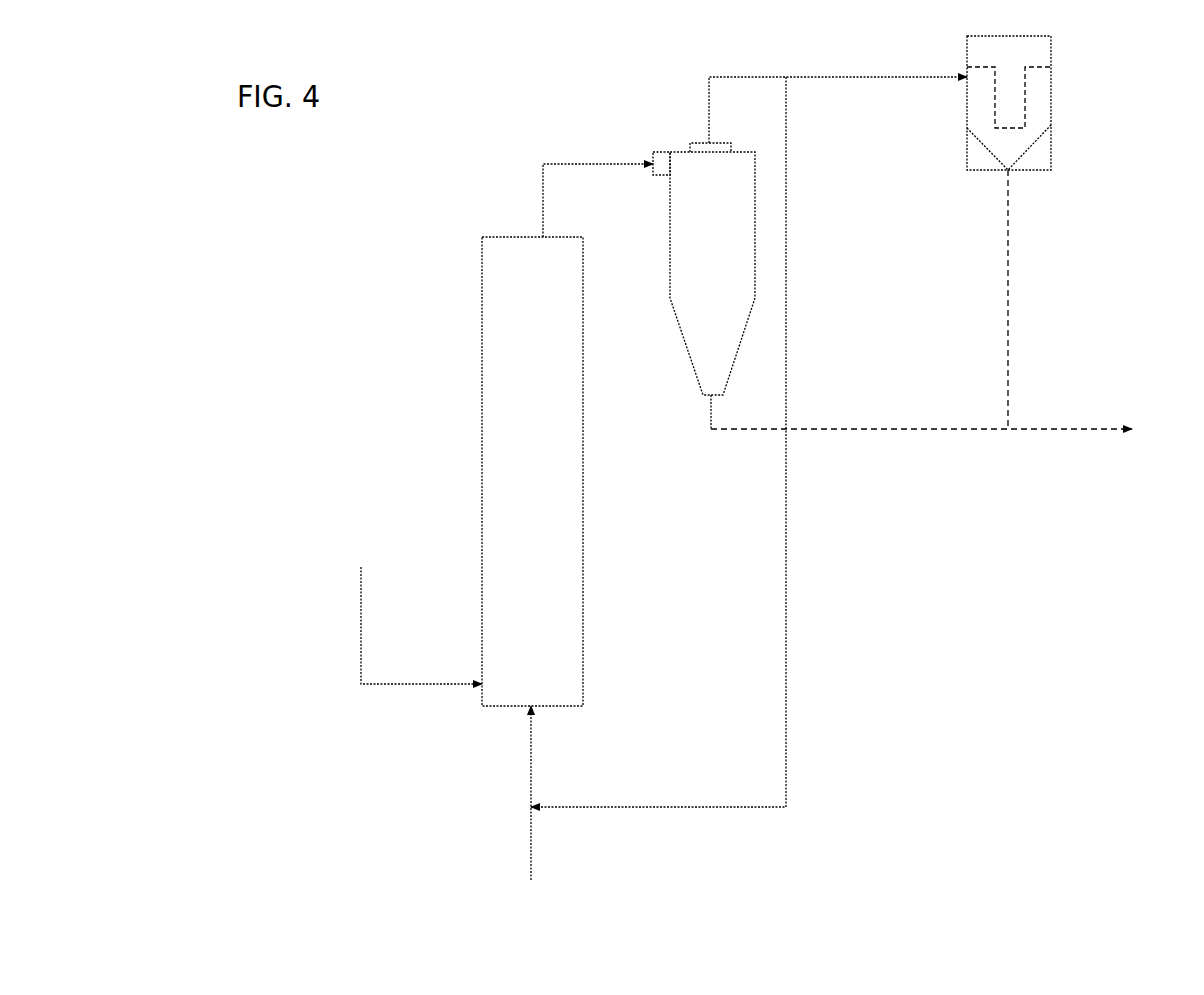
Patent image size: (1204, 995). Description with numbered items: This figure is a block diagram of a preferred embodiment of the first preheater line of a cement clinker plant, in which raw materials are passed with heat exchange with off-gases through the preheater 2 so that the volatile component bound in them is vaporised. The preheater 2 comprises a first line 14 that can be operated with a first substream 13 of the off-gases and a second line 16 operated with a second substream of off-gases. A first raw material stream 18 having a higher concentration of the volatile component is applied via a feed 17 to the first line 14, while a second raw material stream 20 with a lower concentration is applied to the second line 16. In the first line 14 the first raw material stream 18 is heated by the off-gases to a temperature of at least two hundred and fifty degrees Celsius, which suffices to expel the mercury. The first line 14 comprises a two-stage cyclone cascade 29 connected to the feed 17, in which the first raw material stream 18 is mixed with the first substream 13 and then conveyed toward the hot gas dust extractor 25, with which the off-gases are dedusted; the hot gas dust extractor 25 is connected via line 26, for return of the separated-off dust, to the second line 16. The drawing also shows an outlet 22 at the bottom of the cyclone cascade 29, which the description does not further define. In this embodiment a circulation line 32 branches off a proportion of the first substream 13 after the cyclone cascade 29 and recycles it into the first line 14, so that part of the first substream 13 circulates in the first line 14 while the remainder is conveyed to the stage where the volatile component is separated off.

The preheater 2 is at (450, 348).
The first line 14 is at (460, 285).
The second raw material stream 20 is at (563, 468).
The cyclone cascade 29 is at (723, 193).
The solids outlet line 22 is at (740, 432).
The first raw material stream 18 is at (1108, 427).
The hot gas dust extractor 25 is at (1043, 111).
The line 26 is at (1008, 307).
The circulation line 32 is at (787, 603).
The first substream 13 is at (531, 875).
The second line 16 is at (361, 568).
The feed 17 is at (361, 605).